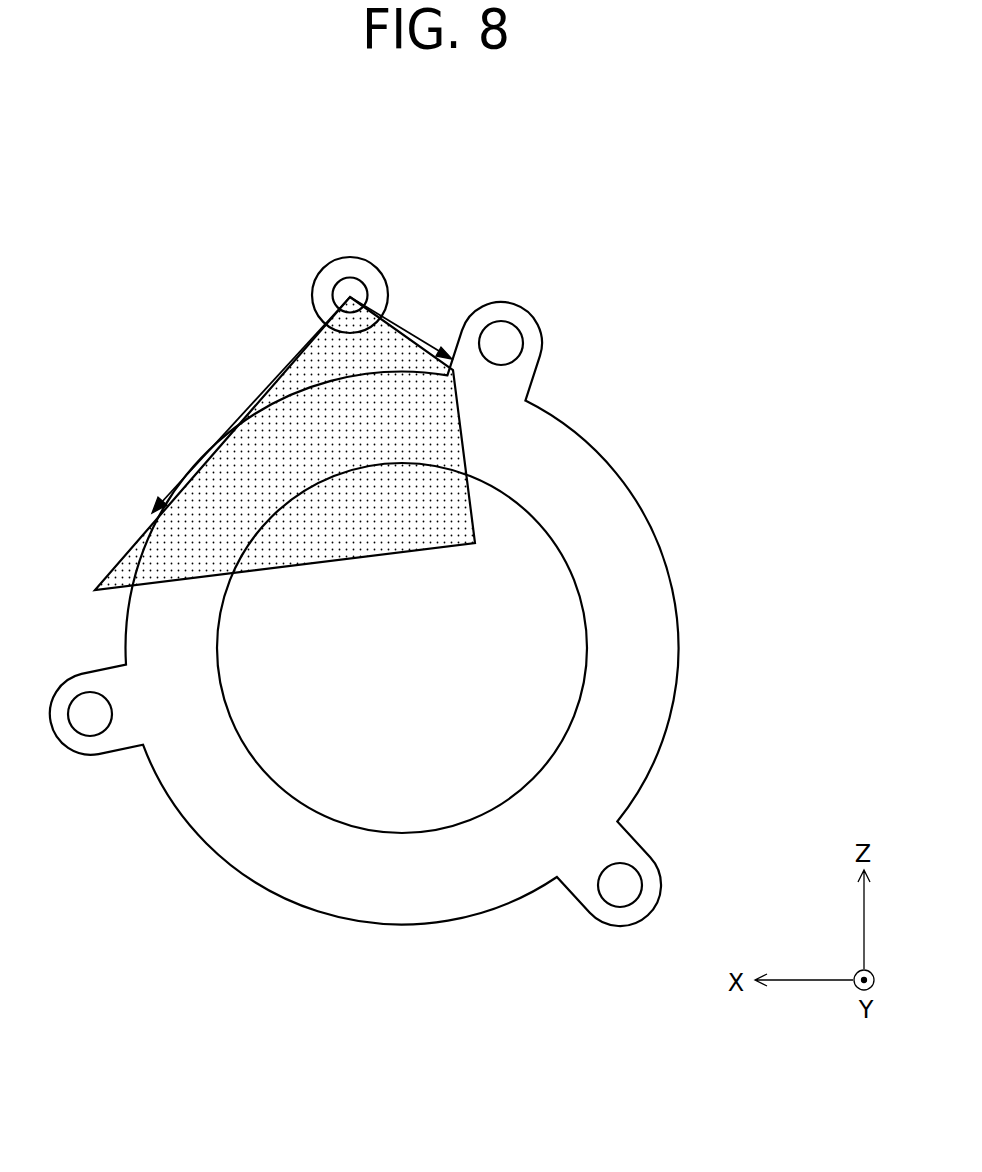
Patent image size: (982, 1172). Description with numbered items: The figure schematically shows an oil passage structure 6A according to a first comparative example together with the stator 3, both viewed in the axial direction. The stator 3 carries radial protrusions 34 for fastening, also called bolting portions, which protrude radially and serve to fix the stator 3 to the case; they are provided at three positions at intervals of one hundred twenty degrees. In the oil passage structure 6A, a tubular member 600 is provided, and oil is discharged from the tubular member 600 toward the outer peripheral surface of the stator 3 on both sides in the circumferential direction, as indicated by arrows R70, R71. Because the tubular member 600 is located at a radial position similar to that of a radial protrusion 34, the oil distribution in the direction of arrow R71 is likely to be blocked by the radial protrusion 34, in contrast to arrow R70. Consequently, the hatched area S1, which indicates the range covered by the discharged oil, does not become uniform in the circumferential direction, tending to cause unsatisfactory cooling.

The stator 3 is at (393, 884).
The radial protrusion for fastening 34 is at (533, 332).
The hatched area S1 is at (440, 437).
The tubular member 600 is at (322, 273).
The arrow R71 is at (410, 333).
The arrow R70 is at (243, 407).
The oil passage structure 6A is at (386, 208).